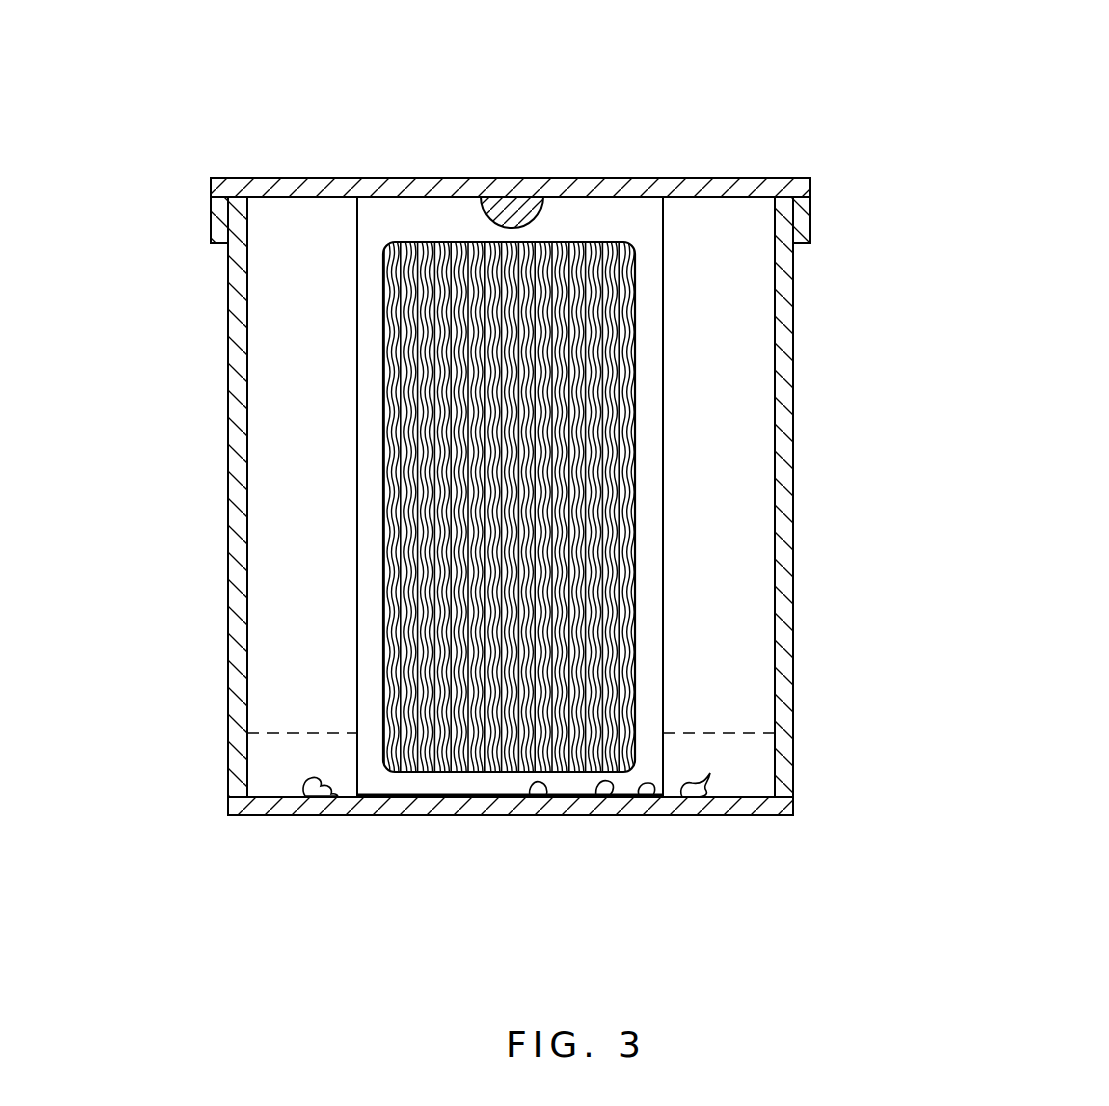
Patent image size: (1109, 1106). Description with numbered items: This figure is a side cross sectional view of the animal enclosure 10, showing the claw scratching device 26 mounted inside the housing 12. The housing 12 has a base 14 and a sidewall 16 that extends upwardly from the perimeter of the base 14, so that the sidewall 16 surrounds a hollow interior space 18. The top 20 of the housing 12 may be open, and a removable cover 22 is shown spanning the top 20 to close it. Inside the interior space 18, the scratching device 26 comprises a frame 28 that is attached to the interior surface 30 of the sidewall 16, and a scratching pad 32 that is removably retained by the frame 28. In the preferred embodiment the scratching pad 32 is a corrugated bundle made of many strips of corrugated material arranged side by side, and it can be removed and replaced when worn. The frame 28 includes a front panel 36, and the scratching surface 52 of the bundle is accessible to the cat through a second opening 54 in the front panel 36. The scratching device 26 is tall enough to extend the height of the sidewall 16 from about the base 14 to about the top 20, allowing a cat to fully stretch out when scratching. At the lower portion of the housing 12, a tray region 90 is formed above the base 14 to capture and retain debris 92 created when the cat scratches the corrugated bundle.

The animal enclosure 10 is at (892, 118).
The housing 12 is at (795, 481).
The base 14 is at (371, 797).
The sidewall 16 is at (236, 443).
The interior space 18 is at (745, 390).
The top 20 is at (322, 197).
The cover 22 is at (668, 182).
The claw scratching device 26 is at (440, 205).
The frame 28 is at (582, 215).
The interior surface 30 is at (715, 350).
The scratching pad 32 is at (496, 262).
The front panel 36 is at (367, 320).
The scratching surface 52 is at (352, 643).
The second opening 54 is at (635, 550).
The tray region 90 is at (765, 758).
The debris 92 is at (320, 797).